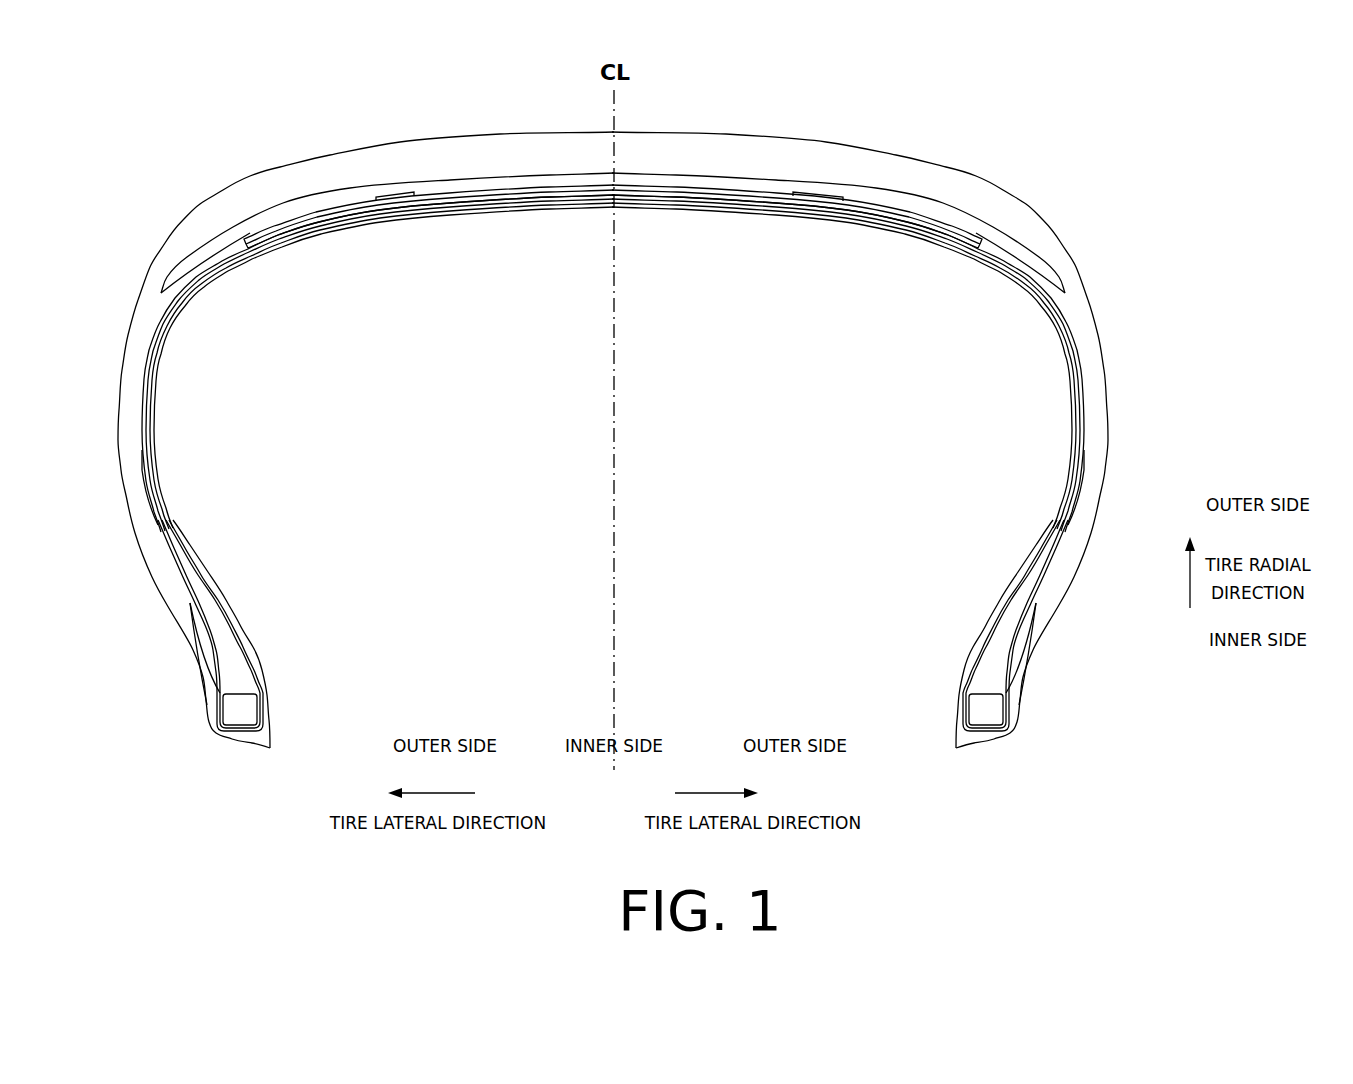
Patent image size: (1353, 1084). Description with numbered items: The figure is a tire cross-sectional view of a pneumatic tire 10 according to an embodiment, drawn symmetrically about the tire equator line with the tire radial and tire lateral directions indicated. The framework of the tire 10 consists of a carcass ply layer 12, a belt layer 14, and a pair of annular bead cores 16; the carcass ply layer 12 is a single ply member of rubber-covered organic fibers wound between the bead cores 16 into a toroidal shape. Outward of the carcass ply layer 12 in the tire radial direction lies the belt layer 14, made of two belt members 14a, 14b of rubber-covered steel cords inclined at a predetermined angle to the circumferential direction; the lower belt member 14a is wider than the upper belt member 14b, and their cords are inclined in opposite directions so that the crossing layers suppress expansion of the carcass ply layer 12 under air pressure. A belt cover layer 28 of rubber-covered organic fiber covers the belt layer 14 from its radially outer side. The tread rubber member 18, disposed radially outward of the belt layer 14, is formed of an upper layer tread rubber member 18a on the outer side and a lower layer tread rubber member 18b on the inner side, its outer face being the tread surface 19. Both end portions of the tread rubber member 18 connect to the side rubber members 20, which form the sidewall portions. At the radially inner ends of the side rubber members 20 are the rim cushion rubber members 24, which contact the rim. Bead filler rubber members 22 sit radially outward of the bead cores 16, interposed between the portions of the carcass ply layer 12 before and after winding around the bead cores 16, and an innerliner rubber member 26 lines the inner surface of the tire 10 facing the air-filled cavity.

The pneumatic tire 10 is at (962, 88).
The carcass ply layer 12 is at (237, 264).
The belt layer 14 is at (735, 254).
The belt member 14a is at (707, 201).
The belt member 14b is at (668, 196).
The bead core 16 is at (245, 705).
The tread rubber member 18 is at (925, 106).
The upper layer tread rubber member 18a is at (870, 167).
The lower layer tread rubber member 18b is at (885, 197).
The tread surface 19 is at (655, 132).
The side rubber member 20 is at (145, 523).
The bead filler rubber member 22 is at (230, 652).
The rim cushion rubber member 24 is at (213, 690).
The innerliner rubber member 26 is at (154, 412).
The belt cover layer 28 is at (413, 196).